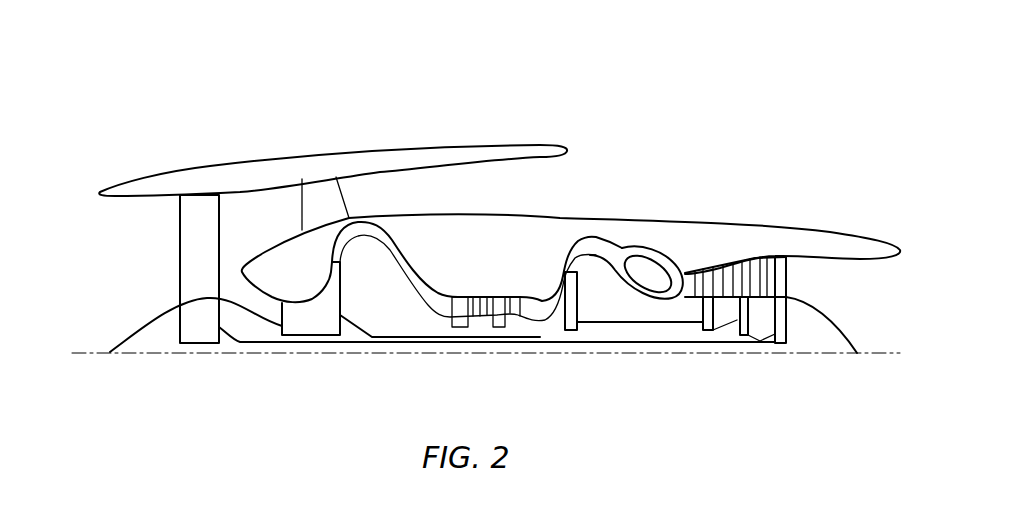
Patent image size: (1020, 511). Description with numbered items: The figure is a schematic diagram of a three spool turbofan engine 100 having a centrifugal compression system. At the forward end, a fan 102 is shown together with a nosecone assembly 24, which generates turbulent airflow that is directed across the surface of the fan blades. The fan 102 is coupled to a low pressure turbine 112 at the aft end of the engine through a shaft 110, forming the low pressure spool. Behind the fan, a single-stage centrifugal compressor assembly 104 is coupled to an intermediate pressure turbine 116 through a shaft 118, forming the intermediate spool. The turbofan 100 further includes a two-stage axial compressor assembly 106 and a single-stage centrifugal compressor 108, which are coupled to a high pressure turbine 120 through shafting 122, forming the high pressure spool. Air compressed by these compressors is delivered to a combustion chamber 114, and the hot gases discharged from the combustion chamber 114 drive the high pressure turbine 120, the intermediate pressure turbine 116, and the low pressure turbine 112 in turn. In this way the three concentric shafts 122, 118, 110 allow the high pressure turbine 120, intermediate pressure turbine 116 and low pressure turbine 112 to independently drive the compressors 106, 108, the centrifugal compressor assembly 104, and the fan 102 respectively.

The three spool turbofan engine 100 is at (792, 135).
The fan 102 is at (192, 254).
The nosecone assembly 24 is at (130, 332).
The two-stage axial compressor assembly 106 is at (487, 262).
The single-stage centrifugal compressor assembly 104 is at (323, 340).
The shaft 110 is at (253, 343).
The shaft 118 is at (400, 337).
The single-stage centrifugal compressor 108 is at (565, 325).
The combustion chamber 114 is at (643, 262).
The shafting 122 is at (630, 322).
The high pressure turbine 120 is at (708, 330).
The intermediate pressure turbine 116 is at (747, 335).
The low pressure turbine 112 is at (780, 343).